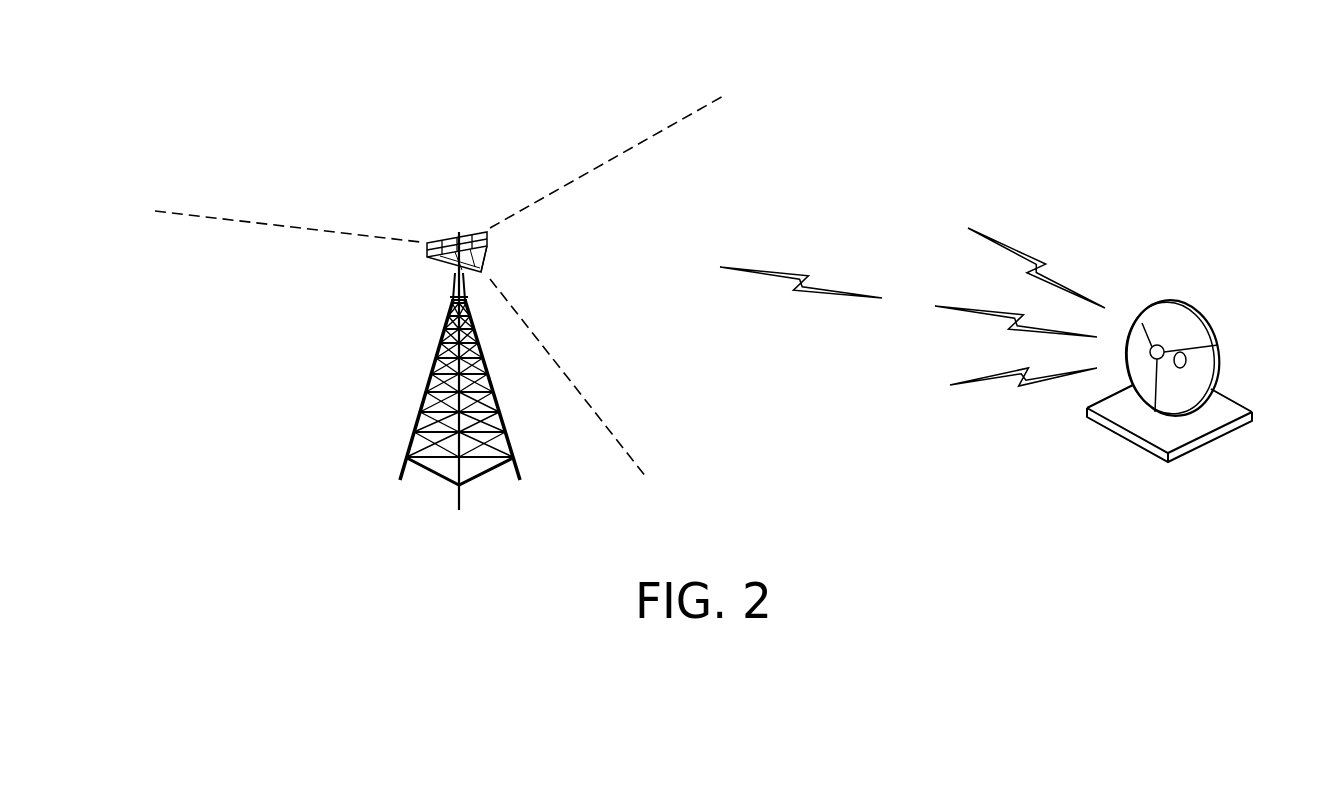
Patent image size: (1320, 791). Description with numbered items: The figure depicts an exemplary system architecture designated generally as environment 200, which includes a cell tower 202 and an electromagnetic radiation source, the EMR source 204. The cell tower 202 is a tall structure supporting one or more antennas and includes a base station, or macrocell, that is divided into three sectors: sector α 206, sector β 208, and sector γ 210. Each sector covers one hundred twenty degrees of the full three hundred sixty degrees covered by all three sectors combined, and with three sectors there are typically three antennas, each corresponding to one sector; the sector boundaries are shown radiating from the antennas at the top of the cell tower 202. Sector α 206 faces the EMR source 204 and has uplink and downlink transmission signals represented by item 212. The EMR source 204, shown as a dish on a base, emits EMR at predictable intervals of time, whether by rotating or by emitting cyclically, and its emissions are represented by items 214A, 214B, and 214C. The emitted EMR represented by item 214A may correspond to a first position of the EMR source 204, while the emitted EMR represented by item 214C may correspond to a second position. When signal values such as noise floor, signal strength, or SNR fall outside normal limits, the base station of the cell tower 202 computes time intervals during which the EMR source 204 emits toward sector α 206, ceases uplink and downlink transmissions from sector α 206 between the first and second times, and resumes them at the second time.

The environment 200 is at (1134, 121).
The cell tower 202 is at (417, 444).
The EMR source 204 is at (1125, 442).
The sector α 206 is at (637, 290).
The sector β 208 is at (423, 189).
The sector γ 210 is at (365, 337).
The uplink and downlink transmission signals 212 is at (800, 274).
The EMR emission 214A is at (985, 377).
The EMR emission 214B is at (993, 310).
The EMR emission 214C is at (1012, 245).